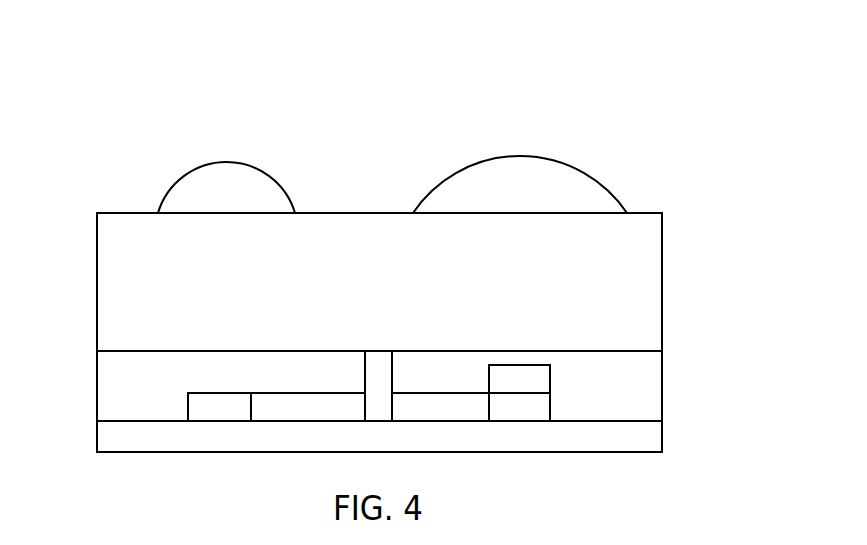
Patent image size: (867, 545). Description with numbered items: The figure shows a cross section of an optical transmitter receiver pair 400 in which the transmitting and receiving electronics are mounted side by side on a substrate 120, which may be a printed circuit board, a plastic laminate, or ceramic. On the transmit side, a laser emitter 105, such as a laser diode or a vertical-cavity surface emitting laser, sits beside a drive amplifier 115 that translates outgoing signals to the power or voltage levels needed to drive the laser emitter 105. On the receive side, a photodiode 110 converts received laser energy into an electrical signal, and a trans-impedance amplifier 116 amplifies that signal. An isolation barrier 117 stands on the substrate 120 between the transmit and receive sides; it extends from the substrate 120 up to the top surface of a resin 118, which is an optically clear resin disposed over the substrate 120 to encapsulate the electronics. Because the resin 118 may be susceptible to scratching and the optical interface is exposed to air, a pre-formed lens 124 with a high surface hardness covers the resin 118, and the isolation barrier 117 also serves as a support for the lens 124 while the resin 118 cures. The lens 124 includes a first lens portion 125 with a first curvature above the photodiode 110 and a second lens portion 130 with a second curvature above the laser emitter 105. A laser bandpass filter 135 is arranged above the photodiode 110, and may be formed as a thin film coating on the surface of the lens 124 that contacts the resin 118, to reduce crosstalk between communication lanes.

The optical transmitter receiver pair 400 is at (602, 46).
The lens 124 is at (662, 258).
The resin 118 is at (662, 380).
The substrate 120 is at (662, 429).
The second lens portion 130 is at (260, 170).
The first lens portion 125 is at (583, 171).
The laser emitter 105 is at (188, 400).
The drive amplifier 115 is at (272, 393).
The isolation barrier 117 is at (378, 421).
The trans-impedance amplifier 116 is at (415, 393).
The photodiode 110 is at (550, 400).
The laser bandpass filter 135 is at (550, 372).